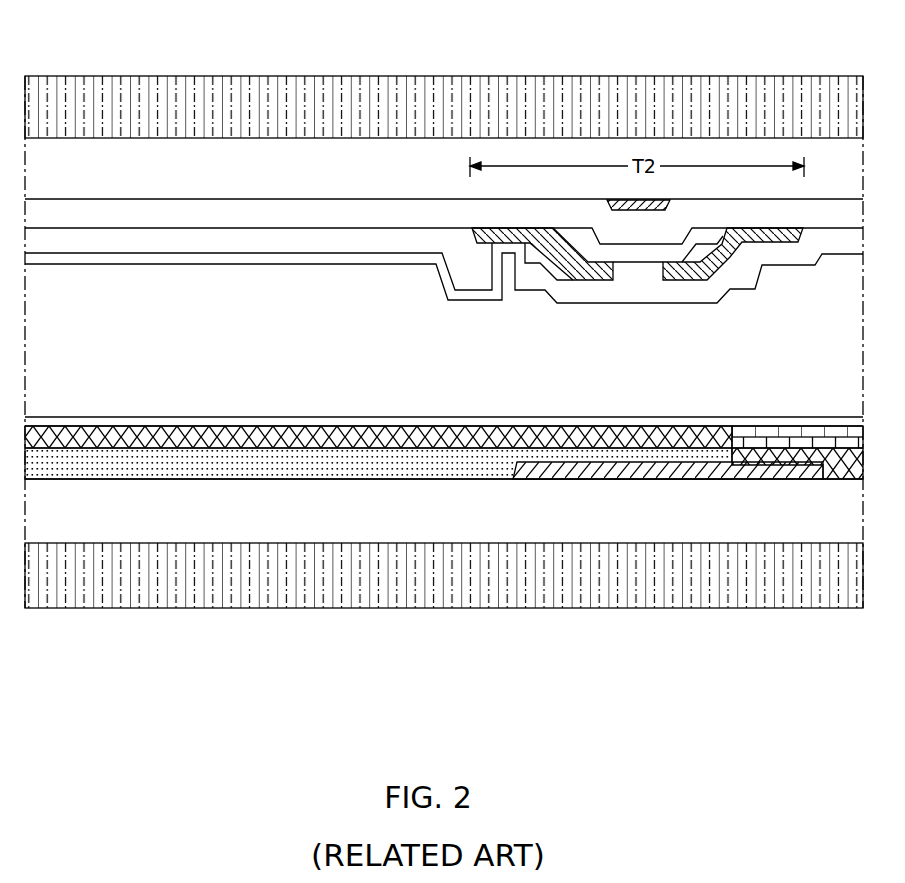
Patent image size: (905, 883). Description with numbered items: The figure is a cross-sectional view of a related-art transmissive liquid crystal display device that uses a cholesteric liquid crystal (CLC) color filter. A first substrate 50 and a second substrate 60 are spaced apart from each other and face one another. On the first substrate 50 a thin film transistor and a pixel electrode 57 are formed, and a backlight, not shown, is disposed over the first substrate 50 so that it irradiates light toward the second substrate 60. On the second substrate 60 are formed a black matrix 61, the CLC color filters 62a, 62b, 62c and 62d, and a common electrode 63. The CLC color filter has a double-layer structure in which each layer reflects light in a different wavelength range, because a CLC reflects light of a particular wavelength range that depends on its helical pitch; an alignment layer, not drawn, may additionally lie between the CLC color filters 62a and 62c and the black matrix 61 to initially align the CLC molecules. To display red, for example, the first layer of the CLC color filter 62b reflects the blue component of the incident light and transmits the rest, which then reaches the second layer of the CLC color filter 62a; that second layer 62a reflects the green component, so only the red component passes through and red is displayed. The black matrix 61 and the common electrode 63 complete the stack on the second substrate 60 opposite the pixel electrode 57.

The first substrate 50 is at (378, 163).
The pixel electrode 57 is at (388, 257).
The second substrate 60 is at (577, 530).
The black matrix 61 is at (708, 470).
The CLC color filter (second layer) 62a is at (447, 462).
The CLC color filter (first layer) 62b is at (317, 443).
The CLC color filter 62c is at (812, 463).
The CLC color filter 62d is at (765, 438).
The common electrode 63 is at (188, 422).